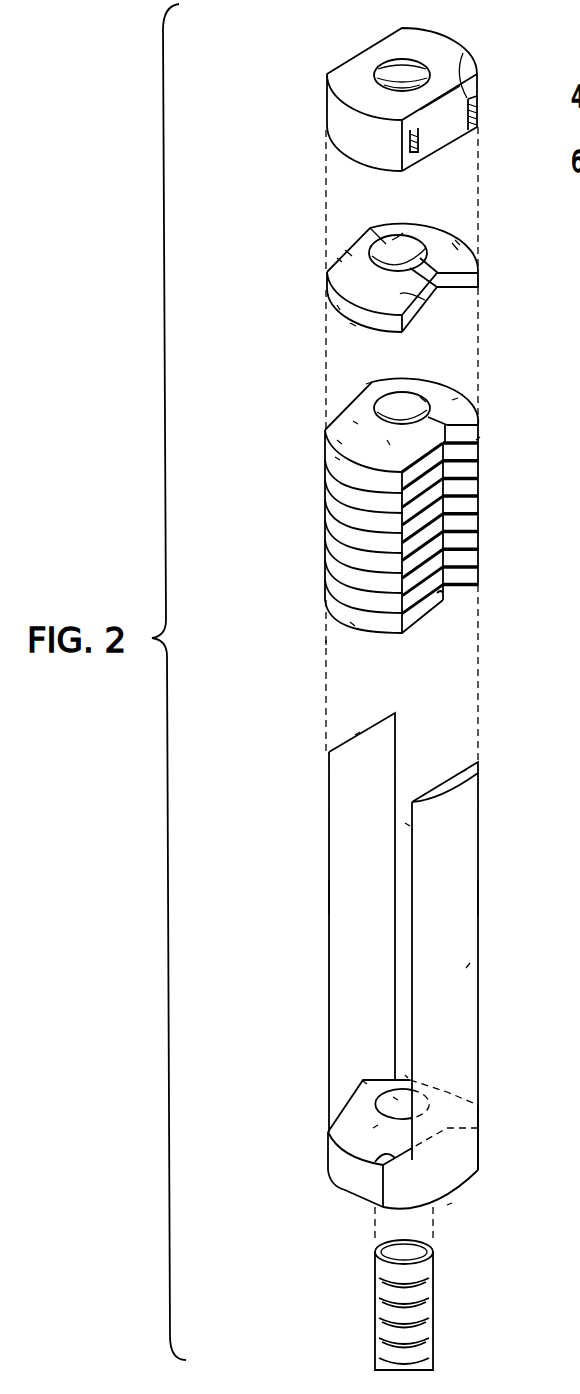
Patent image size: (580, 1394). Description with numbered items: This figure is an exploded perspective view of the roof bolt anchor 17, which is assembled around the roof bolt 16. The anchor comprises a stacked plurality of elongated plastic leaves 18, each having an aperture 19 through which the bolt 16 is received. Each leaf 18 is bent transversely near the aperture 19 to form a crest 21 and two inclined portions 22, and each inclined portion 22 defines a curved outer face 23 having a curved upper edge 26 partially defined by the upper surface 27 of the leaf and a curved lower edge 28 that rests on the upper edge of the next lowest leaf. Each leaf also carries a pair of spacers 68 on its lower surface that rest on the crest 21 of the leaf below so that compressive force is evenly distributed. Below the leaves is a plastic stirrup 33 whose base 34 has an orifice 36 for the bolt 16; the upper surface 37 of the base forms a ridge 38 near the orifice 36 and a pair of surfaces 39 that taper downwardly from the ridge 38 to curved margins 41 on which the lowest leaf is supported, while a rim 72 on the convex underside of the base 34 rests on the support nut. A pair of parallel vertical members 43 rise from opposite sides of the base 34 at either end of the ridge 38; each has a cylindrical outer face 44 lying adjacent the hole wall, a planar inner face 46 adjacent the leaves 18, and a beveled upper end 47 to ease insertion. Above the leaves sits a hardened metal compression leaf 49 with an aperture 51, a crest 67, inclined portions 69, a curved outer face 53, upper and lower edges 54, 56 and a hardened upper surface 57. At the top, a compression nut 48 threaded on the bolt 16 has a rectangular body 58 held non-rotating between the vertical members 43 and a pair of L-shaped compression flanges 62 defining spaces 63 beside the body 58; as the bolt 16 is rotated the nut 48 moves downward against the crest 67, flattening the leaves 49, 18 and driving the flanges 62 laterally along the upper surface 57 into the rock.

The roof bolt 16 is at (370, 1320).
The roof bolt anchor 17 is at (268, 678).
The plastic leaves 18 is at (290, 522).
The aperture 19 is at (420, 397).
The crest 21 is at (360, 378).
The inclined portions 22 is at (348, 414).
The curved outer face 23 is at (335, 457).
The curved upper edge 26 is at (337, 440).
The upper surface 27 is at (387, 440).
The curved lower edge 28 is at (340, 483).
The stirrup 33 is at (285, 972).
The base 34 is at (462, 1169).
The orifice 36 is at (393, 1097).
The upper surface 37 is at (370, 1137).
The ridge 38 is at (363, 1081).
The surfaces 39 is at (405, 1075).
The margins 41 is at (327, 1128).
The vertical members 43 is at (322, 898).
The cylindrical outer face 44 is at (470, 963).
The planar inner face 46 is at (405, 823).
The upper end 47 is at (355, 735).
The compression nut 48 is at (350, 58).
The compression leaf 49 is at (500, 272).
The aperture 51 is at (403, 233).
The curved outer face 53 is at (452, 243).
The upper edge 54 is at (337, 258).
The lower edge 56 is at (350, 323).
The upper surface 57 is at (425, 300).
The rectangular body 58 is at (440, 118).
The compression flanges 62 is at (340, 120).
The spaces 63 is at (463, 53).
The crest 67 is at (368, 232).
The spacers 68 is at (437, 597).
The inclined portions 69 is at (460, 232).
The rim 72 is at (447, 1205).